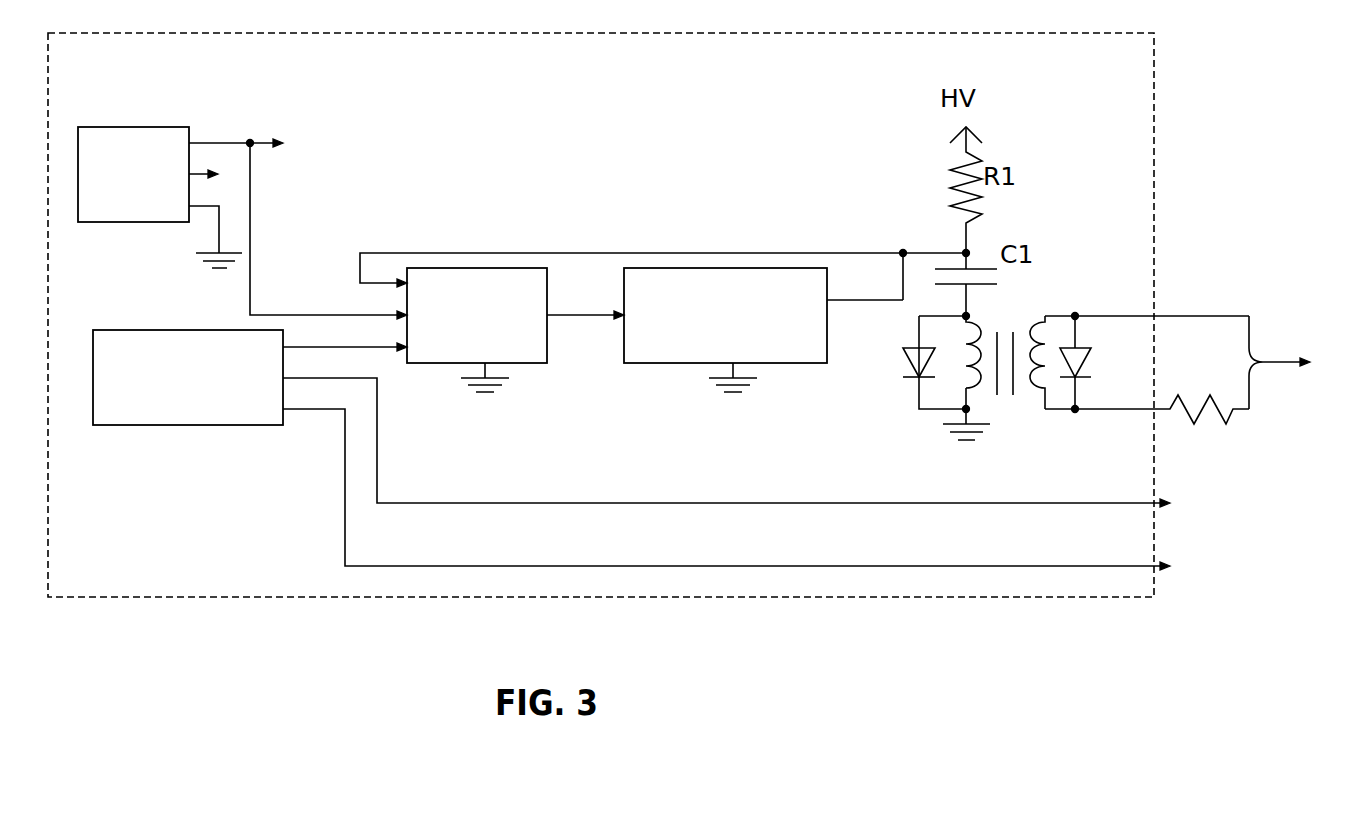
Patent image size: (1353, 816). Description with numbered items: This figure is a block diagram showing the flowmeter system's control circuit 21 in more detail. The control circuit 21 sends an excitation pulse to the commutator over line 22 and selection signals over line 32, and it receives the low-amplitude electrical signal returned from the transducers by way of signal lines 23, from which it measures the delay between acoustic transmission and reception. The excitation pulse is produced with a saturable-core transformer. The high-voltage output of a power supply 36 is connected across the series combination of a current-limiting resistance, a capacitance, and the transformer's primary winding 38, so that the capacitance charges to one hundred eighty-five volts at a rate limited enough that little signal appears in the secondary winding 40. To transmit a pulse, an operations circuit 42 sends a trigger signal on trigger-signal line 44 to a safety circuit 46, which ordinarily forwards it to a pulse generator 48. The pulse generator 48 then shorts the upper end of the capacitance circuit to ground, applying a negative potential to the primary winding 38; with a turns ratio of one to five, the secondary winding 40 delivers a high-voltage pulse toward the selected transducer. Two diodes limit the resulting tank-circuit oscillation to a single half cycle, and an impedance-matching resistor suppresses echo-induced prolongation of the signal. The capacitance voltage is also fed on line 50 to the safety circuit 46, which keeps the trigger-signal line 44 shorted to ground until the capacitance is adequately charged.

The control circuit 21 is at (1155, 143).
The line 22 is at (1280, 362).
The signal lines 23 is at (1123, 503).
The line 32 is at (1123, 566).
The power supply 36 is at (126, 127).
The primary winding 38 is at (963, 369).
The secondary winding 40 is at (1028, 318).
The operations circuit 42 is at (205, 330).
The trigger-signal line 44 is at (375, 348).
The safety circuit 46 is at (532, 363).
The pulse generator 48 is at (657, 363).
The line 50 is at (578, 253).